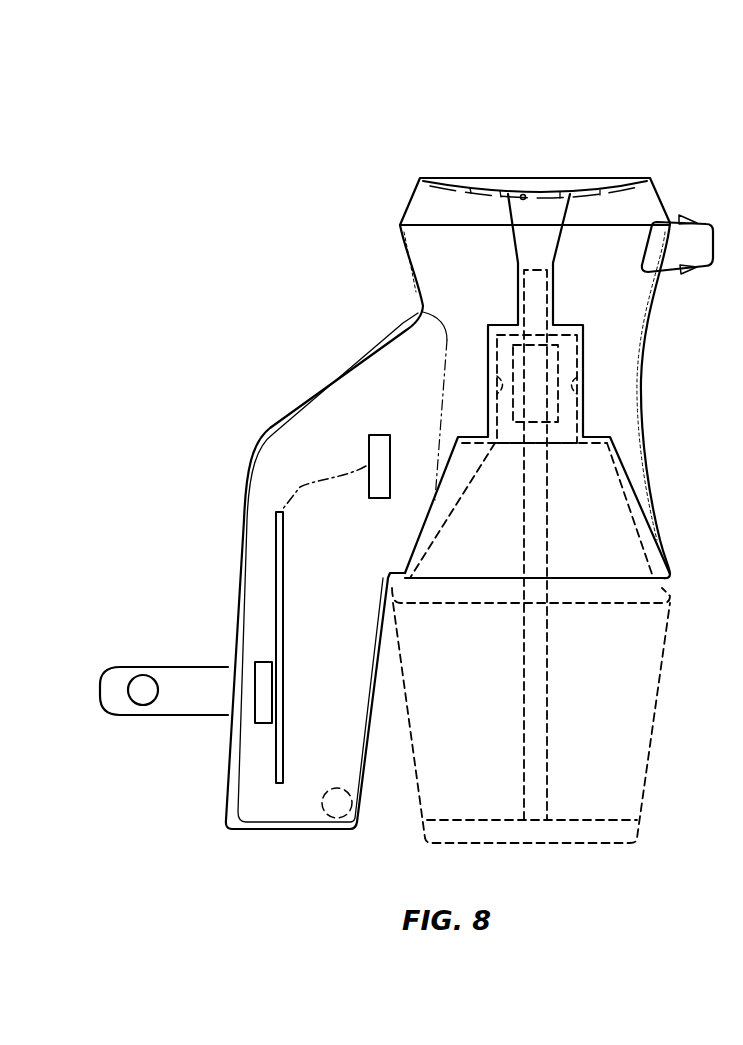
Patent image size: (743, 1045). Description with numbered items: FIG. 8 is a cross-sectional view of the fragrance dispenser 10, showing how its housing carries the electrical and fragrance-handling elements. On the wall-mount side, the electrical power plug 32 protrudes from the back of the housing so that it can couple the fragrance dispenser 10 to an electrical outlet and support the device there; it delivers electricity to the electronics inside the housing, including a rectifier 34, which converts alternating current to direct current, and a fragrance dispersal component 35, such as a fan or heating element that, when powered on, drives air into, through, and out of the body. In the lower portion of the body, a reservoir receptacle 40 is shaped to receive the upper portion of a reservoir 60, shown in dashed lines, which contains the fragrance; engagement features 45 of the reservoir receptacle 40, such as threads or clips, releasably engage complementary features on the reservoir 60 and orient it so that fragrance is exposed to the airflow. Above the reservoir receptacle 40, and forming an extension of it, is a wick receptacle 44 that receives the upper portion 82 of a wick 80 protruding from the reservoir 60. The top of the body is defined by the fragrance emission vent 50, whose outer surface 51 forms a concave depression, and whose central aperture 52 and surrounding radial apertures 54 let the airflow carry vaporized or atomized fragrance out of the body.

The fragrance dispenser 10 is at (370, 143).
The electrical power plug 32 is at (184, 636).
The rectifier 34 is at (267, 723).
The fragrance dispersal component 35 is at (375, 447).
The reservoir receptacle 40 is at (607, 440).
The wick receptacle 44 is at (518, 283).
The engagement features 45 is at (497, 358).
The fragrance emission vent 50 is at (550, 176).
The outer surface 51 is at (638, 178).
The central aperture 52 is at (523, 196).
The radial apertures 54 is at (452, 184).
The reservoir 60 is at (617, 790).
The wick 80 is at (533, 374).
The upper portion of the wick 82 is at (537, 303).